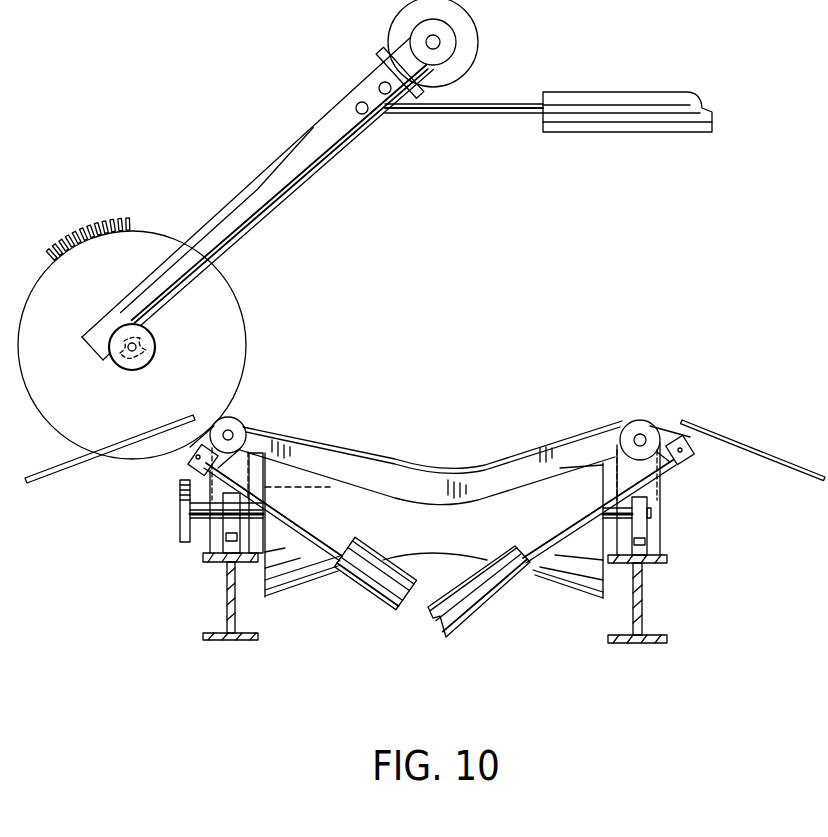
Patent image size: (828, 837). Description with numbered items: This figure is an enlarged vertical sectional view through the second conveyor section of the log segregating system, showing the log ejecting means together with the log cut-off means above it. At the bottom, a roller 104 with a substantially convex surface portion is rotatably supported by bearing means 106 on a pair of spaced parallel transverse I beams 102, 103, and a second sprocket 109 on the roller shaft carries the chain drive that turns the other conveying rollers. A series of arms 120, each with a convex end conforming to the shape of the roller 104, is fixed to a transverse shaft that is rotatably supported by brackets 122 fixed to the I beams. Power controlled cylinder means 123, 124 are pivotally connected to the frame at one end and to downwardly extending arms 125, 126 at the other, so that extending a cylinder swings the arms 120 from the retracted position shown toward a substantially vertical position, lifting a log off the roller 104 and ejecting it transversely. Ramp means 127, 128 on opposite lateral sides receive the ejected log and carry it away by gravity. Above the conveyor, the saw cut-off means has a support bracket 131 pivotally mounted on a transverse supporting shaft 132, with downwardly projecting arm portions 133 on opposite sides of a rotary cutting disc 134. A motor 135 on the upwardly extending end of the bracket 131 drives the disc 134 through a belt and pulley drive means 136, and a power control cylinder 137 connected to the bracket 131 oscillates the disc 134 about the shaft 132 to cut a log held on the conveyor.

The transverse I beam 102 is at (641, 606).
The transverse I beam 103 is at (228, 616).
The roller 104 is at (446, 532).
The bearing means 106 is at (222, 532).
The second sprocket 109 is at (178, 512).
The arm 120 is at (262, 429).
The bracket 122 is at (232, 426).
The power controlled cylinder means 123 is at (385, 598).
The power controlled cylinder means 124 is at (478, 601).
The downwardly extending arm 125 is at (191, 461).
The downwardly extending arm 126 is at (664, 430).
The ramp means 127 is at (92, 474).
The ramp means 128 is at (804, 459).
The support bracket 131 is at (203, 222).
The transverse supporting shaft 132 is at (379, 85).
The downwardly projecting arm portion 133 is at (110, 320).
The rotary cutting disc 134 is at (242, 346).
The motor 135 is at (471, 32).
The belt and pulley drive means 136 is at (389, 132).
The power control cylinder 137 is at (585, 94).